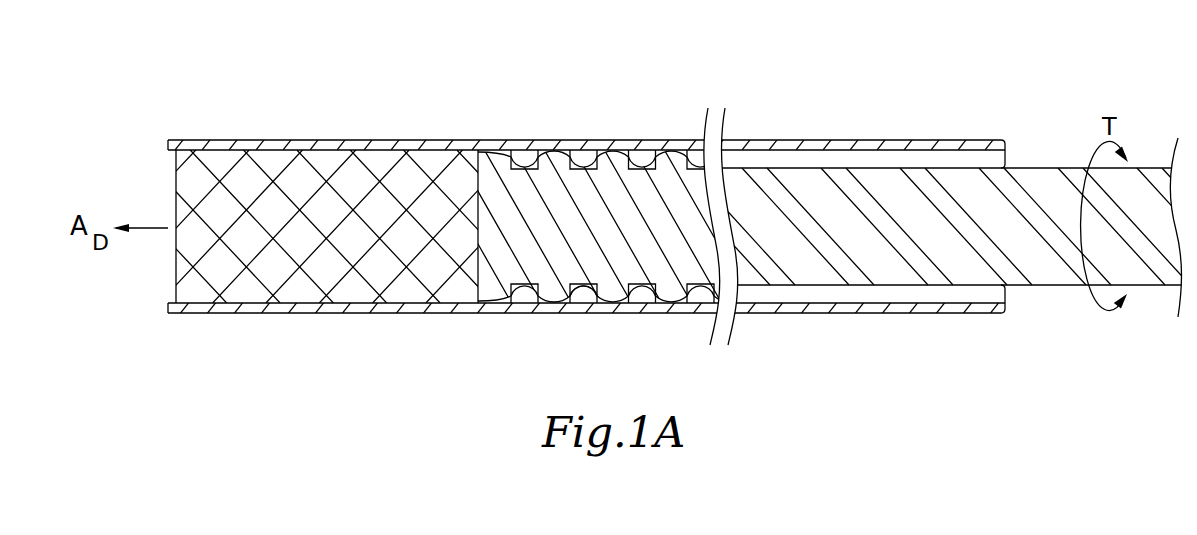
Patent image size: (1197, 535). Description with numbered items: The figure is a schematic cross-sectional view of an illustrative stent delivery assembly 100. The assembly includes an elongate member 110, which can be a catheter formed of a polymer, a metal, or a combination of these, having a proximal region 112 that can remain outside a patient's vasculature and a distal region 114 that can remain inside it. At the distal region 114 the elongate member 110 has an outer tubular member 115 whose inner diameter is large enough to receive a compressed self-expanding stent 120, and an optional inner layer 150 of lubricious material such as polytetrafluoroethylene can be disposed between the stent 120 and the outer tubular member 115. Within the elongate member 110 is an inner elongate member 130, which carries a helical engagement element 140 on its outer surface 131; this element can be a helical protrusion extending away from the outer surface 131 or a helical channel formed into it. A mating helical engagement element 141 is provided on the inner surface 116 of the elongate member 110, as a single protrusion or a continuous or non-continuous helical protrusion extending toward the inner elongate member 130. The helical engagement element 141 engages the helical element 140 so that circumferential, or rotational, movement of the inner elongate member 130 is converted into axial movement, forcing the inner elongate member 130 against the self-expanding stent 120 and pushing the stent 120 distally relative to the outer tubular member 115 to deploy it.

The stent delivery assembly 100 is at (172, 100).
The elongate member 110 is at (663, 118).
The proximal region 112 is at (1002, 122).
The distal region 114 is at (326, 110).
The outer tubular member 115 is at (390, 150).
The inner surface 116 is at (487, 152).
The self-expanding stent 120 is at (298, 265).
The inner elongate member 130 is at (1038, 270).
The outer surface 131 is at (563, 300).
The helical engagement element 140 is at (588, 298).
The helical engagement element 141 is at (531, 158).
The inner layer 150 is at (219, 150).